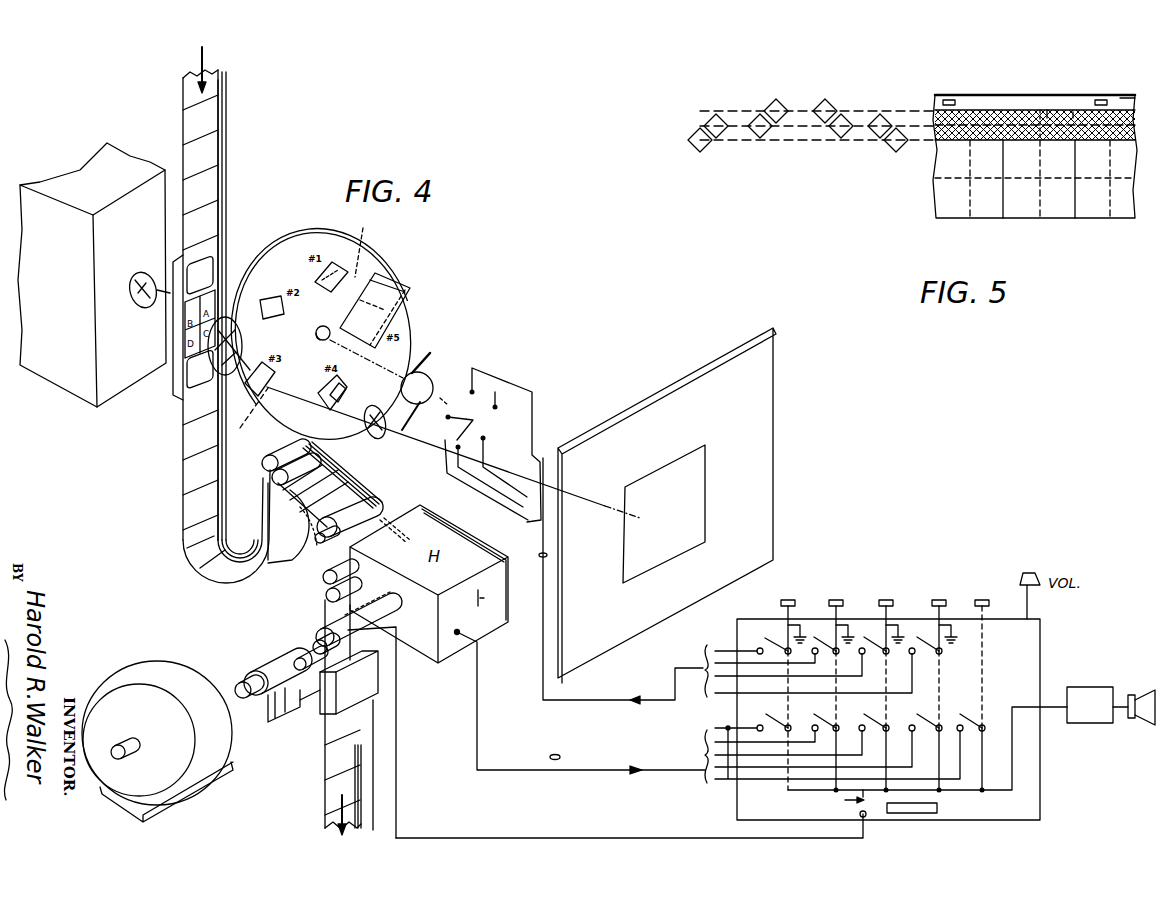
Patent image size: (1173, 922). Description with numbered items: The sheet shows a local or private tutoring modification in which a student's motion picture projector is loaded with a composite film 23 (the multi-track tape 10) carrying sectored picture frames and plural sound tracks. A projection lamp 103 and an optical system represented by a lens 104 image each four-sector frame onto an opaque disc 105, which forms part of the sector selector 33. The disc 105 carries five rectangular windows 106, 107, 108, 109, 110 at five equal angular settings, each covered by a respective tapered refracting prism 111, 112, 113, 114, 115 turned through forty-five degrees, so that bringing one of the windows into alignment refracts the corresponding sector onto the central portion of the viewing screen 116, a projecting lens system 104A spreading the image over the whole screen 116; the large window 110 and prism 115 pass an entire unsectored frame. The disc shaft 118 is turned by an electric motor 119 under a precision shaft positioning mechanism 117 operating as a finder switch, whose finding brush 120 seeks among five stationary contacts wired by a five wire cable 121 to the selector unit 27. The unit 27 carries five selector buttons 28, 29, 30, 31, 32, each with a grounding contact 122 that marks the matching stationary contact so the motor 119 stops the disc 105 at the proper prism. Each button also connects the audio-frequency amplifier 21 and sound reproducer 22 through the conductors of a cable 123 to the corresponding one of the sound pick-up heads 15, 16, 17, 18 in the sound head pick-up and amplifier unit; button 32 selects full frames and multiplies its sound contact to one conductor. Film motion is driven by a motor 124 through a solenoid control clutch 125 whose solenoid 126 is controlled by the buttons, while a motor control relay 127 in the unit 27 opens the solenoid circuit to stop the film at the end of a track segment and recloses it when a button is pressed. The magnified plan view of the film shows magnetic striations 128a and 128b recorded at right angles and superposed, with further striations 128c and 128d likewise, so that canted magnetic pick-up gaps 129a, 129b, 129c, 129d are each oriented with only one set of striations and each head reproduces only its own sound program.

In FIG. 4, the multi-track sound recording tape 10 is at (222, 64).
In FIG. 5, the multi-track sound recording tape 10 is at (1137, 112).
In FIG. 4, the film 23 is at (198, 77).
In FIG. 4, the projection lamp 103 is at (117, 189).
In FIG. 4, the lens 104 is at (233, 318).
In FIG. 4, the projecting lens system 104A is at (366, 432).
In FIG. 4, the opaque disc 105 is at (410, 300).
In FIG. 4, the rectangular window 106 is at (251, 418).
In FIG. 4, the rectangular window 107 is at (346, 395).
In FIG. 4, the rectangular window 108 is at (316, 333).
In FIG. 4, the rectangular window 109 is at (367, 238).
In FIG. 4, the rectangular window 110 is at (400, 258).
In FIG. 4, the refracting prism 111 is at (261, 397).
In FIG. 4, the refracting prism 112 is at (312, 398).
In FIG. 4, the refracting prism 113 is at (277, 298).
In FIG. 4, the refracting prism 114 is at (333, 262).
In FIG. 4, the refracting prism 115 is at (374, 274).
In FIG. 4, the viewing screen 116 is at (640, 400).
In FIG. 4, the shaft positioning mechanism 117 is at (476, 364).
In FIG. 4, the shaft 118 is at (430, 353).
In FIG. 4, the electric motor 119 is at (426, 418).
In FIG. 4, the finding brush 120 is at (466, 417).
In FIG. 4, the five wire cable 121 is at (539, 556).
In FIG. 4, the grounding contact 122 is at (767, 640).
In FIG. 4, the cable 123 is at (560, 757).
In FIG. 4, the motor 124 is at (131, 672).
In FIG. 4, the solenoid control clutch 125 is at (273, 660).
In FIG. 4, the solenoid 126 is at (320, 708).
In FIG. 4, the motor control relay 127 is at (937, 808).
In FIG. 4, the selector unit 27 is at (1040, 641).
In FIG. 4, the audio-frequency amplifier 21 is at (1083, 687).
In FIG. 4, the sound reproducer 22 is at (1150, 718).
In FIG. 4, the selector button 28 is at (836, 598).
In FIG. 4, the selector button 29 is at (886, 598).
In FIG. 4, the selector button 30 is at (939, 598).
In FIG. 4, the selector button 31 is at (982, 598).
In FIG. 4, the selector button 32 is at (789, 598).
In FIG. 4, the sector selector 33 is at (412, 472).
In FIG. 5, the pick-up head 15 is at (781, 105).
In FIG. 5, the pick-up head 16 is at (724, 114).
In FIG. 5, the pick-up head 17 is at (837, 86).
In FIG. 5, the pick-up head 18 is at (886, 113).
In FIG. 5, the striations 128a is at (1073, 115).
In FIG. 5, the striations 128b is at (1047, 110).
In FIG. 5, the striations 128c is at (1133, 88).
In FIG. 5, the striations 128d is at (1040, 127).
In FIG. 5, the magnetic pick-up gap 129a is at (758, 110).
In FIG. 5, the magnetic pick-up gap 129b is at (843, 105).
In FIG. 5, the magnetic pick-up gap 129c is at (700, 128).
In FIG. 5, the magnetic pick-up gap 129d is at (890, 148).